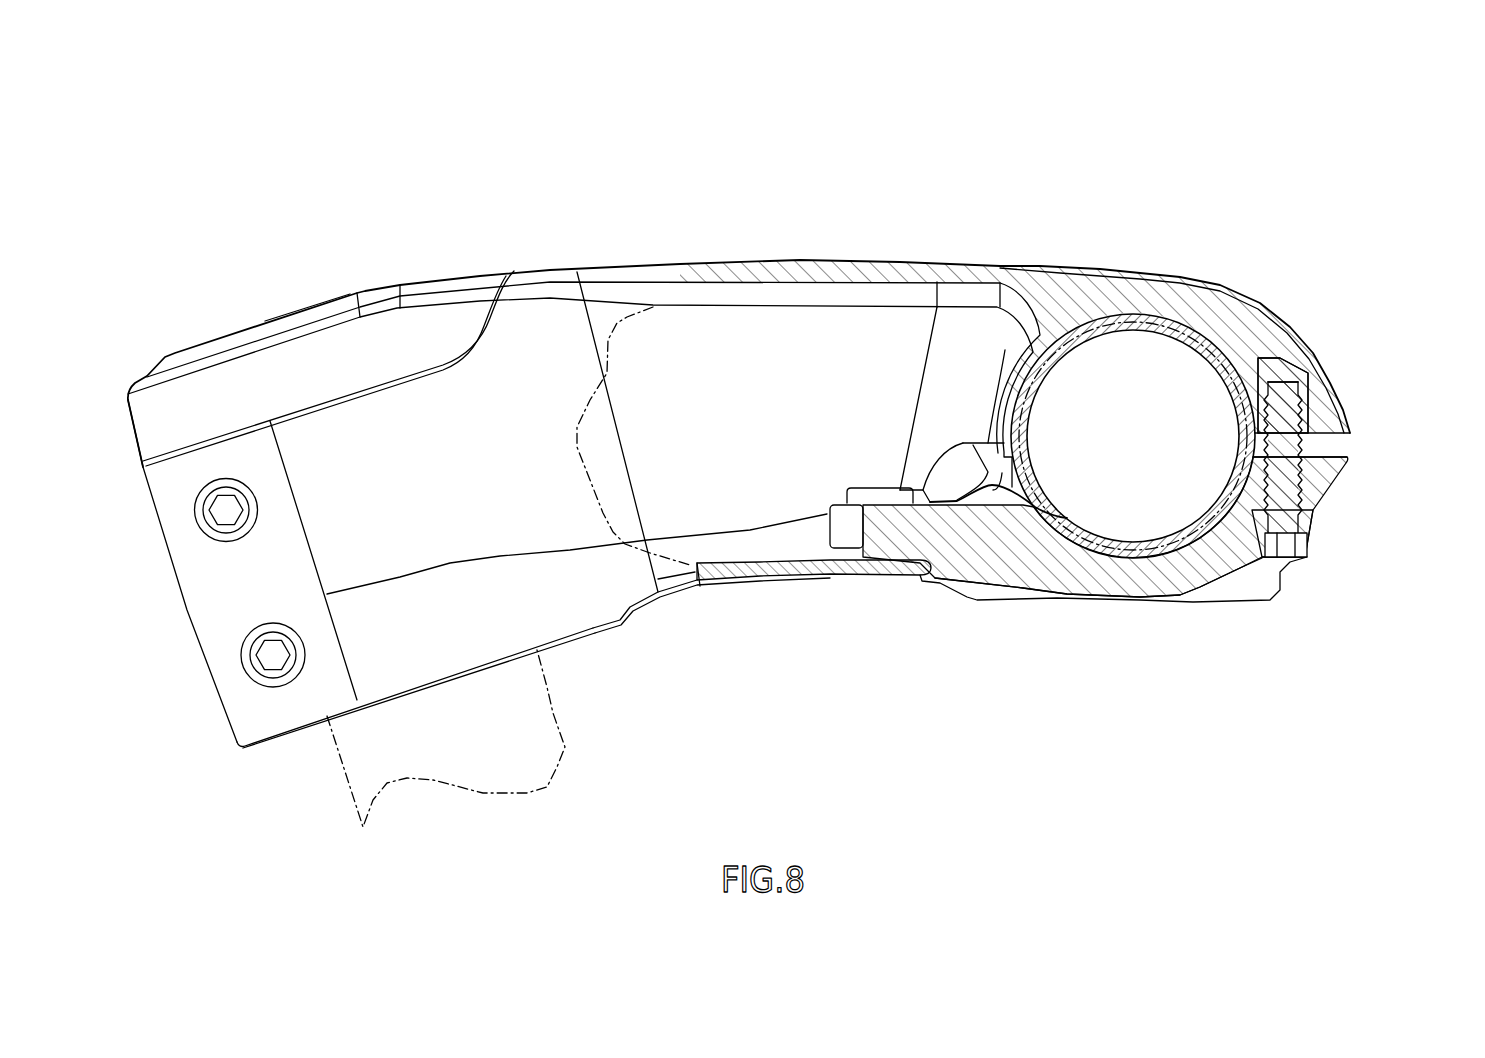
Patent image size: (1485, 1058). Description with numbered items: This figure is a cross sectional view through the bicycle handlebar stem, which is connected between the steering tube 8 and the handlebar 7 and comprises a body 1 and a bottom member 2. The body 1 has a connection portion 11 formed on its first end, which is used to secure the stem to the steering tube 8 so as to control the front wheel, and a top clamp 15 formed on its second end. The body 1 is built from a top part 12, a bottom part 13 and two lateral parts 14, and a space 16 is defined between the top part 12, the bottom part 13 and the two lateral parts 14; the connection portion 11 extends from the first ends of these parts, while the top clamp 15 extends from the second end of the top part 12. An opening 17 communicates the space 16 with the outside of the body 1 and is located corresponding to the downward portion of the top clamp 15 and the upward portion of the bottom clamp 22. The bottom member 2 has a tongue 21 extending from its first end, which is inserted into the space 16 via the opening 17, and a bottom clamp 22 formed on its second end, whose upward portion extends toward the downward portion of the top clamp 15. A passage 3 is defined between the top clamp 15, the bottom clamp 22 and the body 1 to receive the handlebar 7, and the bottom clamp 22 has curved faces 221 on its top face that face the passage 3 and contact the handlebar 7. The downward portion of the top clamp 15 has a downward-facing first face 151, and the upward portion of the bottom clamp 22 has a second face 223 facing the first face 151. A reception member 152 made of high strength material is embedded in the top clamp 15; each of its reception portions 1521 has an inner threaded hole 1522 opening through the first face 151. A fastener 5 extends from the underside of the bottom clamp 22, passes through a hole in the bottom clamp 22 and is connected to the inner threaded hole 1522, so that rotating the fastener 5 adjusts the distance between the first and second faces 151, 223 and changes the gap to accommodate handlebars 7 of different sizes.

The body 1 is at (903, 193).
The connection portion 11 is at (207, 690).
The top part 12 is at (842, 272).
The bottom part 13 is at (757, 570).
The lateral parts 14 is at (747, 323).
The top clamp 15 is at (1223, 307).
The first face 151 is at (1340, 438).
The reception member 152 is at (1407, 300).
The reception portions 1521 is at (1293, 367).
The inner threaded hole 1522 is at (1297, 403).
The space 16 is at (837, 372).
The opening 17 is at (995, 368).
The bottom member 2 is at (1037, 597).
The tongue 21 is at (843, 540).
The bottom clamp 22 is at (1167, 577).
The curved faces 221 is at (1105, 538).
The second face 223 is at (1343, 447).
The passage 3 is at (1177, 490).
The fastener 5 is at (1307, 530).
The handlebar 7 is at (1131, 322).
The steering tube 8 is at (340, 760).